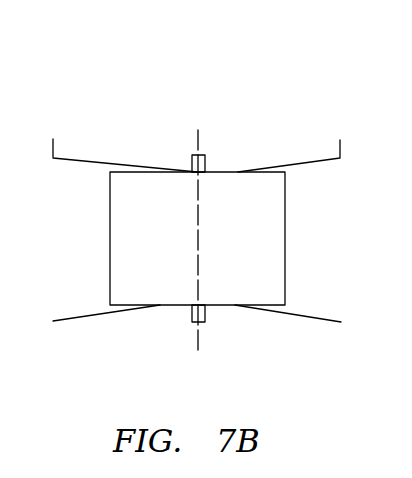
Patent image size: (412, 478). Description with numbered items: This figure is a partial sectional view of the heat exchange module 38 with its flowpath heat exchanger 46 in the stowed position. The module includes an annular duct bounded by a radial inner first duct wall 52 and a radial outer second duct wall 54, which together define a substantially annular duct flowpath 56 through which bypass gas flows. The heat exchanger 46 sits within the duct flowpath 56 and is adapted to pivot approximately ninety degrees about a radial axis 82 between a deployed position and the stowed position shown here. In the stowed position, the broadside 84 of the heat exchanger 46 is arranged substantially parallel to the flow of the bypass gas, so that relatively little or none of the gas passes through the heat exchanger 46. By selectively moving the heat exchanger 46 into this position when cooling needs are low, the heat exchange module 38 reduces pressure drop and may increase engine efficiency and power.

The heat exchange module 38 is at (312, 97).
The flowpath heat exchanger 46 is at (286, 239).
The radial inner first duct wall 52 is at (80, 320).
The radial outer second duct wall 54 is at (85, 159).
The duct flowpath 56 is at (82, 243).
The radial axis 82 is at (199, 340).
The broadside 84 is at (154, 290).